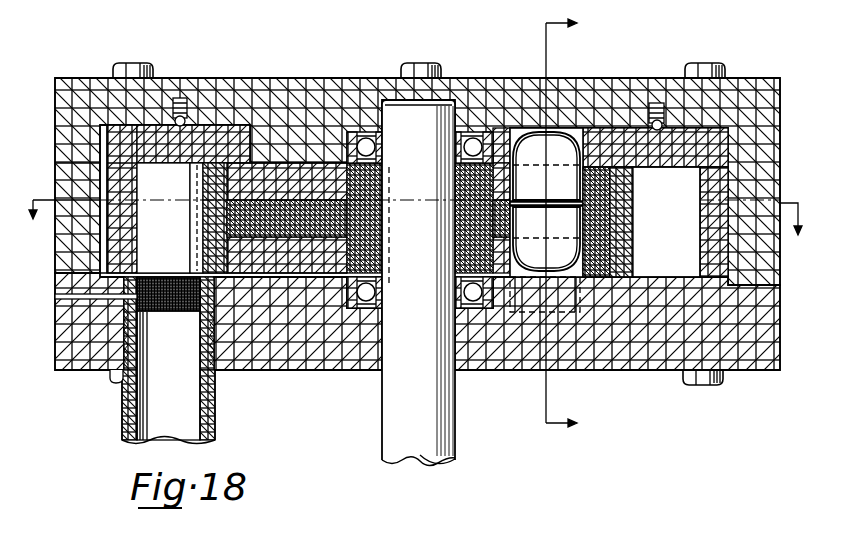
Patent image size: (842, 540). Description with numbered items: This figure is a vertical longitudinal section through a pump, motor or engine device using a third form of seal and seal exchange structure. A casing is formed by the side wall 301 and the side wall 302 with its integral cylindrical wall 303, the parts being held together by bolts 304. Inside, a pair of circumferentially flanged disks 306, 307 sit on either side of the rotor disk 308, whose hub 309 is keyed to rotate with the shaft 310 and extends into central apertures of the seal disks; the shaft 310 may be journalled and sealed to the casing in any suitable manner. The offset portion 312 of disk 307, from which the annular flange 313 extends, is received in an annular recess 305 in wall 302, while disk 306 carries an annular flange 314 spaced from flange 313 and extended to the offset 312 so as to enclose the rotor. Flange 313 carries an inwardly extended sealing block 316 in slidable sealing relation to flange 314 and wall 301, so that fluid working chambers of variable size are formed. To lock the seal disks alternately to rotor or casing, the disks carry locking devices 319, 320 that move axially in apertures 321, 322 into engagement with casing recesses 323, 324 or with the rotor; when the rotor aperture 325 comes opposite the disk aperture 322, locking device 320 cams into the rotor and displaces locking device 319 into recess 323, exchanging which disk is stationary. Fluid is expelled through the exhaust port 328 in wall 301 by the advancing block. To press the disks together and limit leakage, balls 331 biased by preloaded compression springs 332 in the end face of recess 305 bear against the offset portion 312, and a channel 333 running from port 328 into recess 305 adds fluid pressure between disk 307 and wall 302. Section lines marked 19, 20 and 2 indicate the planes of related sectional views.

The side wall 301 is at (283, 370).
The side wall 302 is at (236, 78).
The cylindrical wall 303 is at (55, 125).
The bolts 304 is at (150, 70).
The annular recess 305 is at (147, 122).
The circumferentially flanged disk 306 is at (299, 272).
The circumferentially flanged disk 307 is at (603, 196).
The rotor disk 308 is at (497, 222).
The hub 309 is at (345, 188).
The shaft 310 is at (393, 440).
The offset portion 312 is at (190, 200).
The annular flange 313 is at (80, 296).
The annular flange 314 is at (210, 214).
The sealing block 316 is at (182, 255).
The locking device 319 is at (504, 300).
The locking device 320 is at (533, 131).
The aperture 321 is at (590, 264).
The aperture 322 is at (583, 206).
The casing recess 323 is at (496, 312).
The casing recess 324 is at (577, 131).
The rotor aperture 325 is at (613, 221).
The exhaust port 328 is at (135, 313).
The balls 331 is at (182, 122).
The preloaded compression springs 332 is at (188, 108).
The channel 333 is at (100, 163).
The section line 19- 19 is at (417, 234).
The section line 20- 20 is at (584, 68).
The section line 2- 2 is at (573, 286).